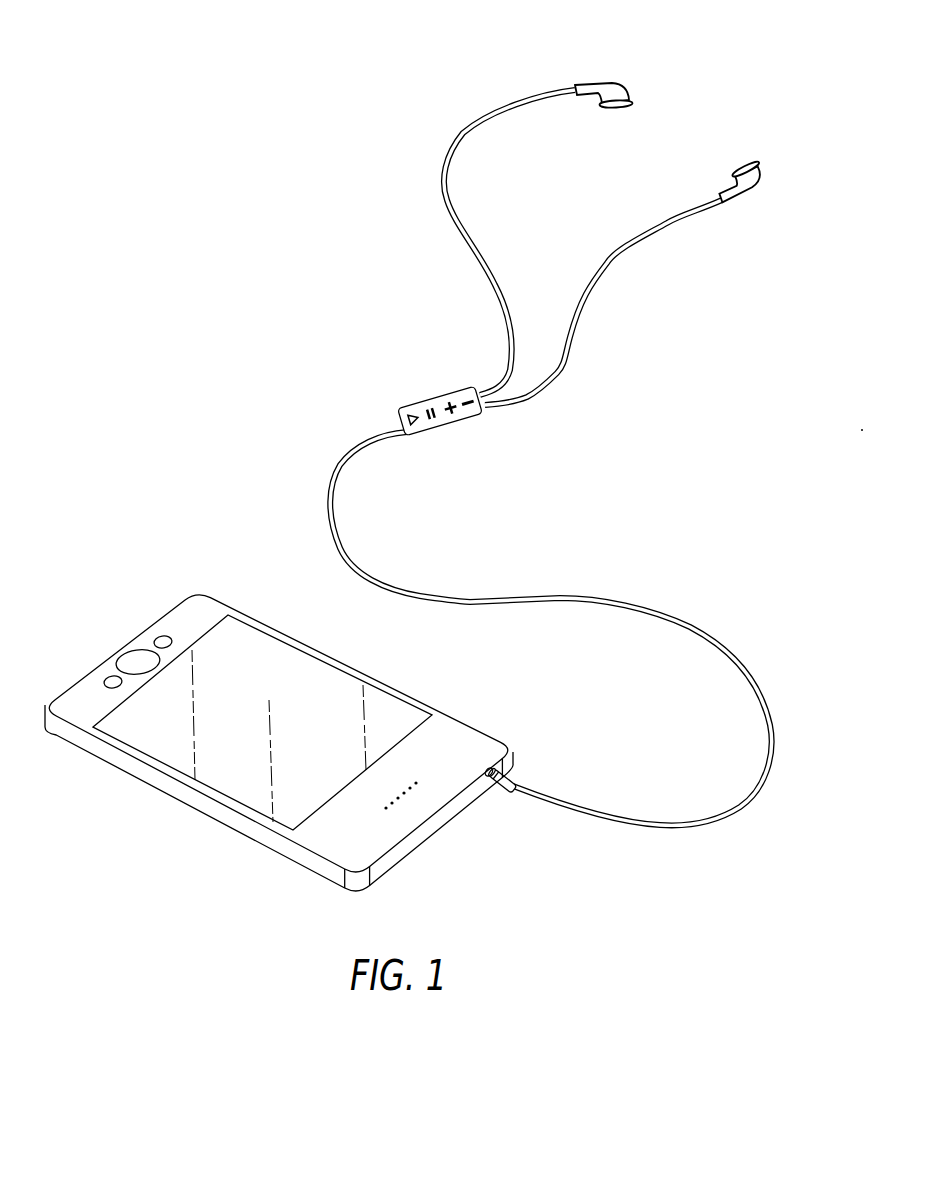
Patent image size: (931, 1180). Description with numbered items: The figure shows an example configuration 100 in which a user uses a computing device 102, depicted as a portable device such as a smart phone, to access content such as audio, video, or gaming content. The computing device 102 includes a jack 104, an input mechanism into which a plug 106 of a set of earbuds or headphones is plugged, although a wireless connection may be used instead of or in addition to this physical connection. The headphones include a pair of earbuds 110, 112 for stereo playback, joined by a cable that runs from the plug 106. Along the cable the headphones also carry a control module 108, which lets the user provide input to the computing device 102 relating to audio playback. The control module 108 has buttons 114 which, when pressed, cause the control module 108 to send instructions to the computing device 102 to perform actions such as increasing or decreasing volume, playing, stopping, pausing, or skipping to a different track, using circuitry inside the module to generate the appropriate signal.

The example configuration 100 is at (238, 255).
The computing device 102 is at (142, 640).
The jack 104 is at (487, 777).
The plug 106 is at (513, 782).
The control module 108 is at (456, 433).
The earbud 110 is at (593, 80).
The earbud 112 is at (758, 193).
The buttons 114 is at (462, 436).